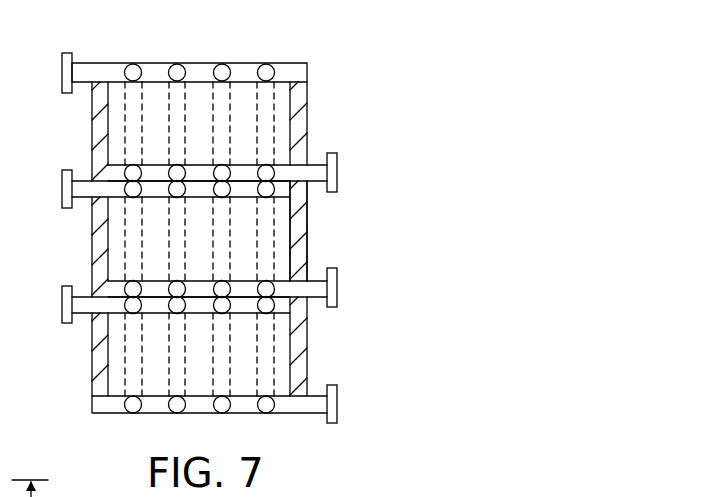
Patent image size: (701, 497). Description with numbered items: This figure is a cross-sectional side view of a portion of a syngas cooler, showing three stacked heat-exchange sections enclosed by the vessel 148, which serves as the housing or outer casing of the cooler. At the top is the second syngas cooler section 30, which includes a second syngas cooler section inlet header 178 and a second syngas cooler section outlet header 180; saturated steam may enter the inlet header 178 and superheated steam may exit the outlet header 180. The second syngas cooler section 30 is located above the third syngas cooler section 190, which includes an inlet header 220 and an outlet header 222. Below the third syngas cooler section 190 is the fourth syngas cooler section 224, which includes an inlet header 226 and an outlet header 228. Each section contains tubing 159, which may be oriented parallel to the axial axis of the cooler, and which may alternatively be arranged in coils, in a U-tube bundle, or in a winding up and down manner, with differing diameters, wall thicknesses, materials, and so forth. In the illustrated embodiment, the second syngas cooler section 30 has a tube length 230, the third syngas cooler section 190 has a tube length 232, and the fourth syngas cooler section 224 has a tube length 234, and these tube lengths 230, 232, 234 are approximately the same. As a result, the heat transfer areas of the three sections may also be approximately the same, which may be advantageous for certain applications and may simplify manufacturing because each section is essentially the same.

The second syngas cooler section 30 is at (314, 41).
The tubing 159 is at (168, 105).
The second syngas cooler section outlet header 180 is at (78, 94).
The second syngas cooler section inlet header 178 is at (317, 161).
The outlet header 222 is at (80, 178).
The third syngas cooler section 190 is at (318, 229).
The vessel 148 is at (300, 243).
The inlet header 220 is at (318, 301).
The fourth syngas cooler section 224 is at (317, 363).
The inlet header 226 is at (315, 414).
The outlet header 228 is at (78, 323).
The tube length 230 is at (426, 66).
The tube length 232 is at (426, 183).
The tube length 234 is at (426, 299).